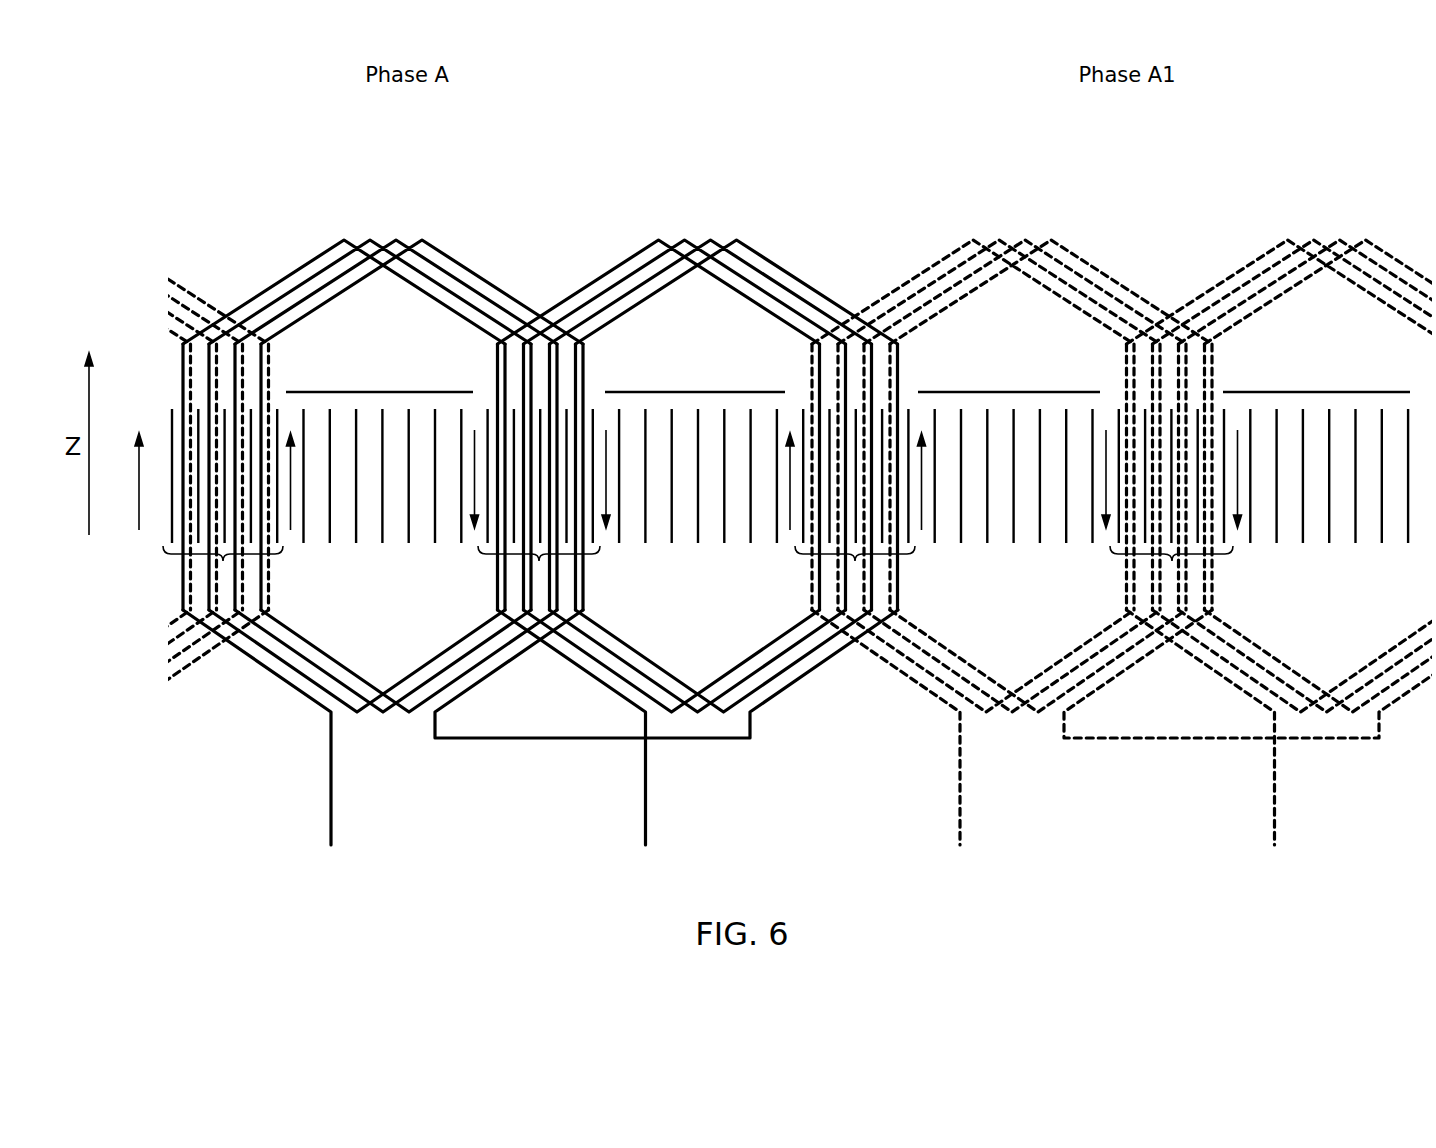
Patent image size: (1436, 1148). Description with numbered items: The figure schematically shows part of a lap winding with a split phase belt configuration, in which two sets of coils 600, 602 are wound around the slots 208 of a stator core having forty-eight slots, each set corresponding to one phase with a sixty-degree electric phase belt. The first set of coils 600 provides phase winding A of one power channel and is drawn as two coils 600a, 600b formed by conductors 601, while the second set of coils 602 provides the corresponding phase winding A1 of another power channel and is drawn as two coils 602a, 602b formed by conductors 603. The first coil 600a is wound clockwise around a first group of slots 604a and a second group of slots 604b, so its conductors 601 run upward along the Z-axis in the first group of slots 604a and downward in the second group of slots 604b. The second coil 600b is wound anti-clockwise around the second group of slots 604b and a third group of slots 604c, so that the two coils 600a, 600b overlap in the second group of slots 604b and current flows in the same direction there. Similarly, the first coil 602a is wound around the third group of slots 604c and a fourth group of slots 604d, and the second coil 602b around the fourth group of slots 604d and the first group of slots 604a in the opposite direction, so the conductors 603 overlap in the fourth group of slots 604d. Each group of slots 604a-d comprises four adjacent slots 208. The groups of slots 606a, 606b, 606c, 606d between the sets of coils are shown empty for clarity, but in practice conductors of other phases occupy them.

The slots 208 is at (1393, 540).
The first set of coils 600 is at (553, 172).
The first coil 600a is at (168, 777).
The second coil 600b is at (895, 250).
The conductors 601 is at (490, 365).
The second set of coils 602 is at (1205, 172).
The first coil 602a is at (818, 777).
The second coil 602b is at (272, 250).
The conductors 603 is at (270, 363).
The first group of slots 604a is at (225, 560).
The second group of slots 604b is at (540, 560).
The third group of slots 604c is at (856, 560).
The fourth group of slots 604d is at (1172, 560).
The group of slots 606a is at (379, 374).
The group of slots 606b is at (695, 374).
The group of slots 606c is at (1009, 374).
The group of slots 606d is at (1316, 374).